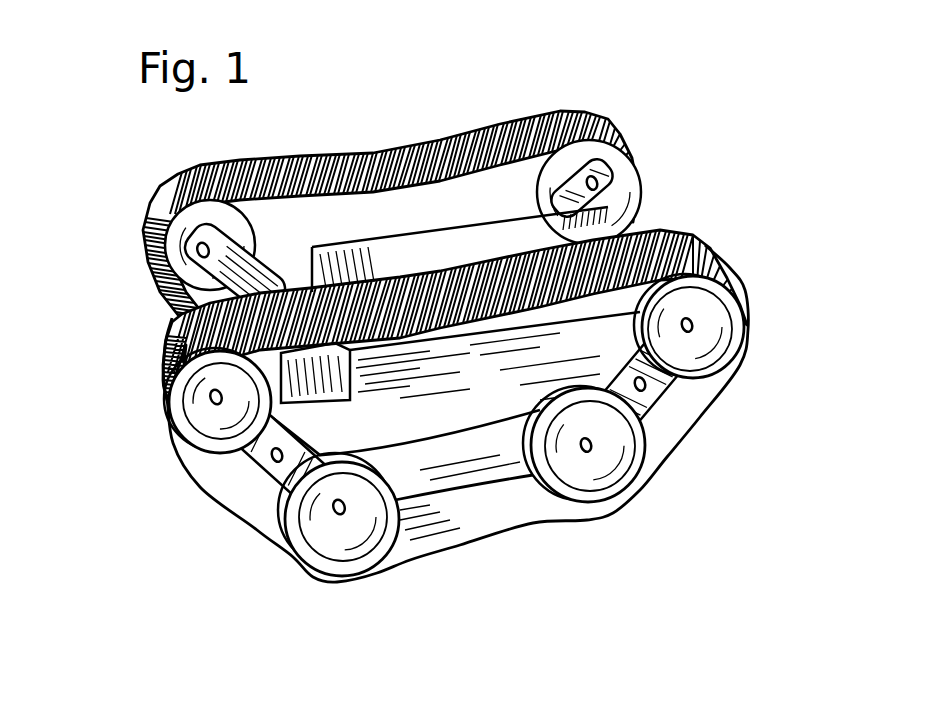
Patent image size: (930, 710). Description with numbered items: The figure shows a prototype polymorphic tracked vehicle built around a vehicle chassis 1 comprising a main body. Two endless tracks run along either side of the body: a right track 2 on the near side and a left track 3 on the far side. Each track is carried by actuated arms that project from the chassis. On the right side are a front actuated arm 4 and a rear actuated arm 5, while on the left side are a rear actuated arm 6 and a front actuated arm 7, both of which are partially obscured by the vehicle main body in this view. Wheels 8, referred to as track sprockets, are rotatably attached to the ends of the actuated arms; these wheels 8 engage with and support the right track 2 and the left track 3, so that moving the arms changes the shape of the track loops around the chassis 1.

The vehicle chassis 1 is at (448, 390).
The right track 2 is at (677, 230).
The left track 3 is at (530, 132).
The front actuated arm 4 is at (647, 385).
The rear actuated arm 5 is at (287, 470).
The rear actuated arm 6 is at (192, 260).
The front actuated arm 7 is at (607, 177).
The wheels 8 is at (695, 305).